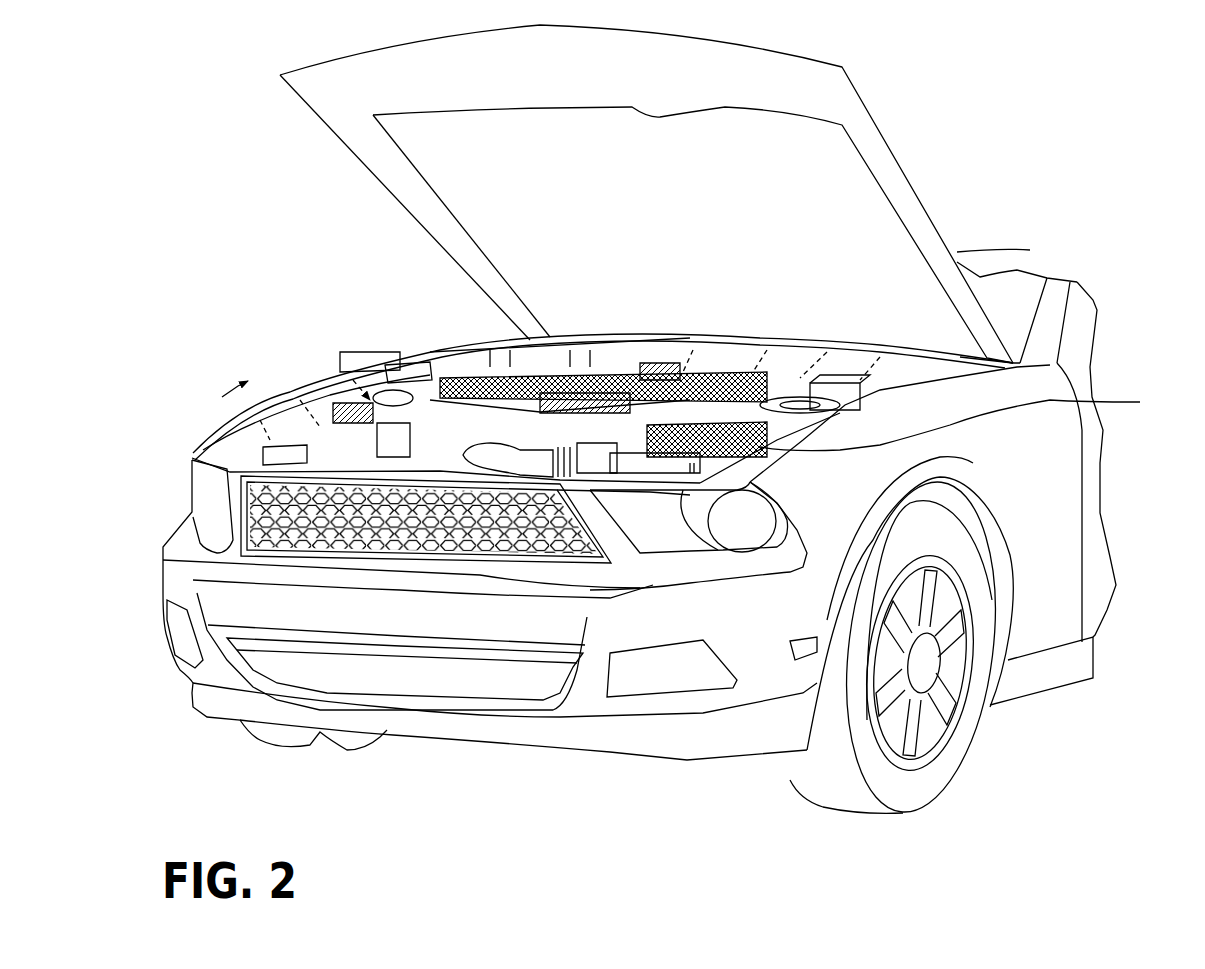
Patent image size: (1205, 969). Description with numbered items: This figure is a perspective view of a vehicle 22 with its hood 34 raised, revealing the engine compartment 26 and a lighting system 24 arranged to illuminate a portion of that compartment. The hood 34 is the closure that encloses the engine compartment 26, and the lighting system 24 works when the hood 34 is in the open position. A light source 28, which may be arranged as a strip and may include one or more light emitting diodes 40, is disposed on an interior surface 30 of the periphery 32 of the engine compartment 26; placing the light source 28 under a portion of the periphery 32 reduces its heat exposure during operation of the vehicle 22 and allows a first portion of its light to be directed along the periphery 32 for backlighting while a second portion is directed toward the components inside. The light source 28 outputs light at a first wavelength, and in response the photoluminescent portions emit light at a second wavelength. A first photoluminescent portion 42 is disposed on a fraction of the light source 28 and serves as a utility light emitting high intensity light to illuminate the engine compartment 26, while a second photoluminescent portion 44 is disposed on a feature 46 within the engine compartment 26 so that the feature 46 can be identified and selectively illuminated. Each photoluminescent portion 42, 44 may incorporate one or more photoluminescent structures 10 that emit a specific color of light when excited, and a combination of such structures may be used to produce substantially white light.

The photoluminescent structure 10 is at (422, 348).
The vehicle 22 is at (970, 218).
The lighting system 24 is at (368, 340).
The engine compartment 26 is at (357, 363).
The light source 28 is at (390, 358).
The interior surface 30 is at (207, 437).
The periphery 32 is at (990, 365).
The hood 34 is at (1030, 250).
The light emitting diodes 40 is at (920, 350).
The first photoluminescent portion 42 is at (880, 343).
The second photoluminescent portion 44 is at (967, 420).
The feature 46 is at (660, 460).